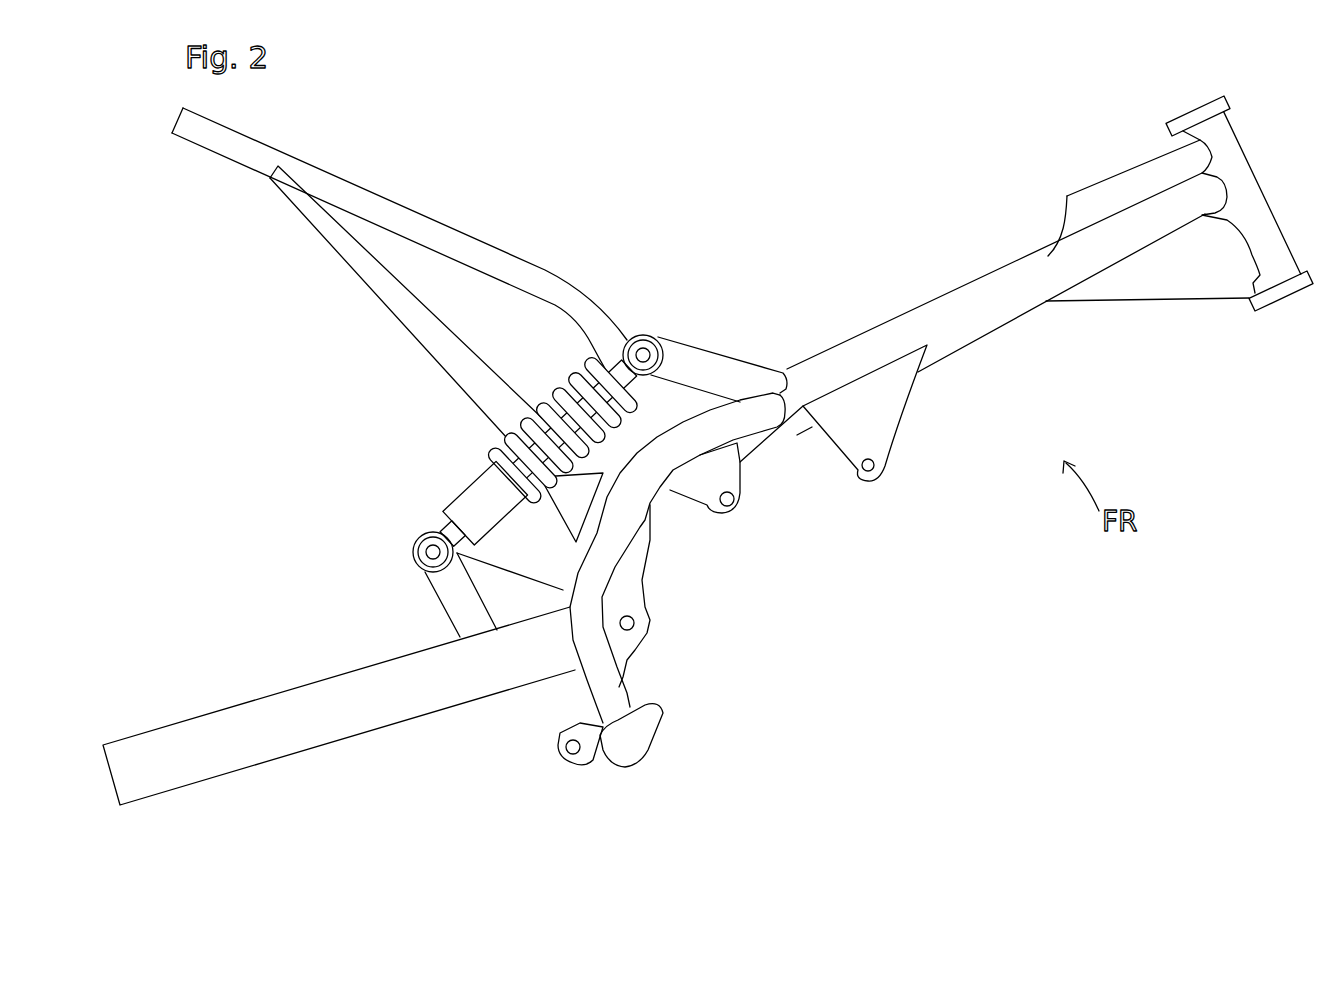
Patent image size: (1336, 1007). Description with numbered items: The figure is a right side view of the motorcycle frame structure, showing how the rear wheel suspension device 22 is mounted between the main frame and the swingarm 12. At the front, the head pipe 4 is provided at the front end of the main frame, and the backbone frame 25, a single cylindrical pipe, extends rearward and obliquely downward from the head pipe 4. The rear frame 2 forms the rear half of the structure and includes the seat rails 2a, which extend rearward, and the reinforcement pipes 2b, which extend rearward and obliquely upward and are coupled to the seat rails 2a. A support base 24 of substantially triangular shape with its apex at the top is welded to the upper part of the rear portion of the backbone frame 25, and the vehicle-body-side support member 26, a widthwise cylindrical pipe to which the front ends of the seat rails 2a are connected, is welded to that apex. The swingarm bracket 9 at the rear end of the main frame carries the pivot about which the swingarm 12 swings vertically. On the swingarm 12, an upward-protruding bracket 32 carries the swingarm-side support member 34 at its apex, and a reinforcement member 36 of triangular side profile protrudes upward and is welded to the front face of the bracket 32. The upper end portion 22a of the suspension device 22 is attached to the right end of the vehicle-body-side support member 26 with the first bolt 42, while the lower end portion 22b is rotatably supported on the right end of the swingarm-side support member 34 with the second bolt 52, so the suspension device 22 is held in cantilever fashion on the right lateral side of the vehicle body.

The rear frame 2 is at (515, 130).
The seat rails 2a is at (403, 215).
The reinforcement pipes 2b is at (408, 297).
The head pipe 4 is at (1238, 175).
The swingarm bracket 9 is at (634, 625).
The swingarm 12 is at (334, 730).
The rear wheel suspension device 22 is at (537, 413).
The upper end portion of the rear wheel suspension device 22a is at (628, 337).
The lower end portion of the rear wheel suspension device 22b is at (432, 552).
The support base 24 is at (688, 405).
The backbone frame 25 is at (973, 284).
The vehicle-body-side support member 26 is at (646, 334).
The bracket 32 is at (472, 617).
The swingarm-side support member 34 is at (438, 533).
The reinforcement member 36 is at (530, 600).
The first bolt 42 is at (645, 354).
The second bolt 52 is at (432, 558).